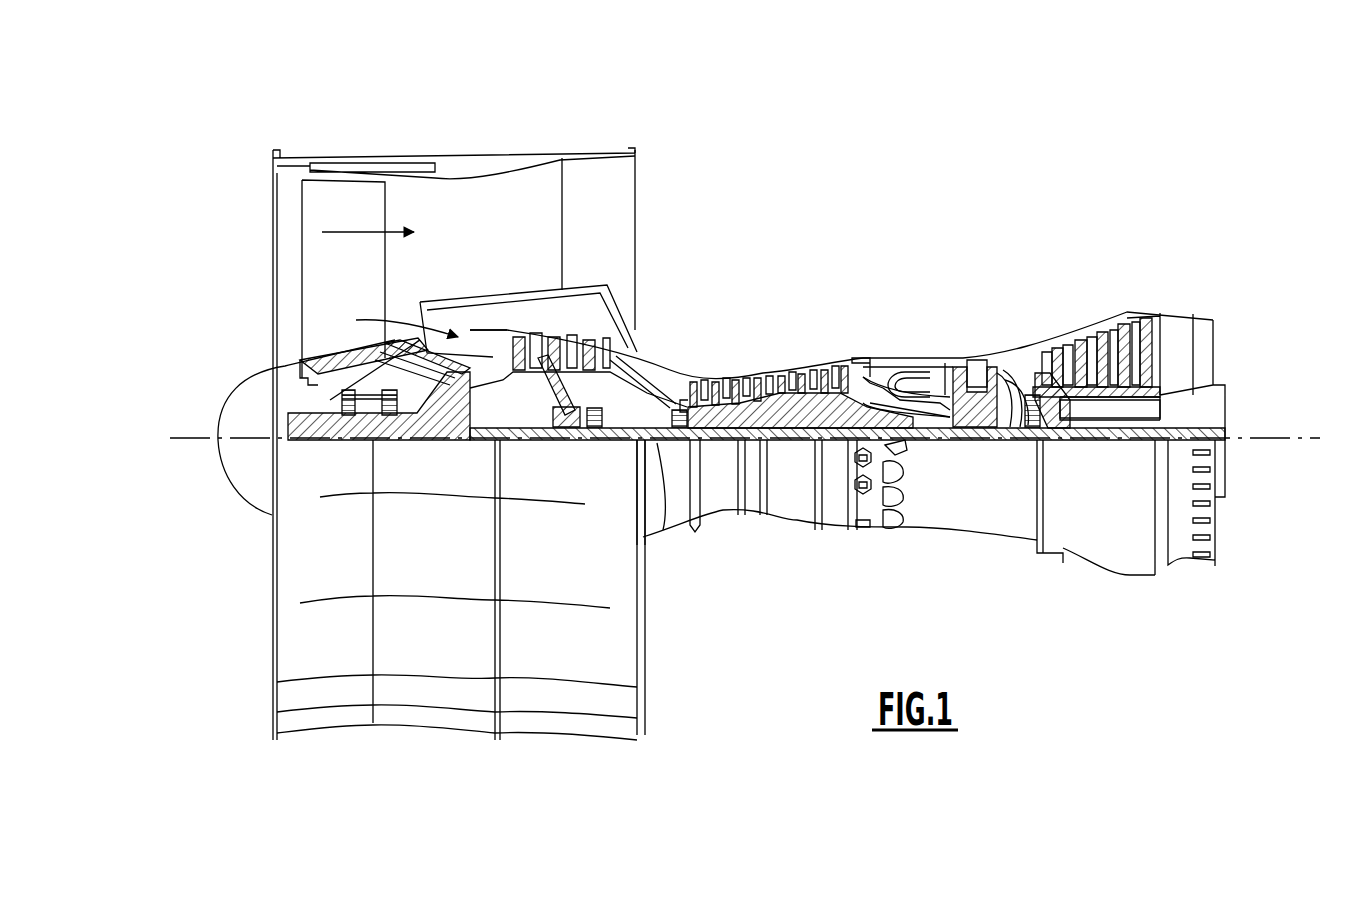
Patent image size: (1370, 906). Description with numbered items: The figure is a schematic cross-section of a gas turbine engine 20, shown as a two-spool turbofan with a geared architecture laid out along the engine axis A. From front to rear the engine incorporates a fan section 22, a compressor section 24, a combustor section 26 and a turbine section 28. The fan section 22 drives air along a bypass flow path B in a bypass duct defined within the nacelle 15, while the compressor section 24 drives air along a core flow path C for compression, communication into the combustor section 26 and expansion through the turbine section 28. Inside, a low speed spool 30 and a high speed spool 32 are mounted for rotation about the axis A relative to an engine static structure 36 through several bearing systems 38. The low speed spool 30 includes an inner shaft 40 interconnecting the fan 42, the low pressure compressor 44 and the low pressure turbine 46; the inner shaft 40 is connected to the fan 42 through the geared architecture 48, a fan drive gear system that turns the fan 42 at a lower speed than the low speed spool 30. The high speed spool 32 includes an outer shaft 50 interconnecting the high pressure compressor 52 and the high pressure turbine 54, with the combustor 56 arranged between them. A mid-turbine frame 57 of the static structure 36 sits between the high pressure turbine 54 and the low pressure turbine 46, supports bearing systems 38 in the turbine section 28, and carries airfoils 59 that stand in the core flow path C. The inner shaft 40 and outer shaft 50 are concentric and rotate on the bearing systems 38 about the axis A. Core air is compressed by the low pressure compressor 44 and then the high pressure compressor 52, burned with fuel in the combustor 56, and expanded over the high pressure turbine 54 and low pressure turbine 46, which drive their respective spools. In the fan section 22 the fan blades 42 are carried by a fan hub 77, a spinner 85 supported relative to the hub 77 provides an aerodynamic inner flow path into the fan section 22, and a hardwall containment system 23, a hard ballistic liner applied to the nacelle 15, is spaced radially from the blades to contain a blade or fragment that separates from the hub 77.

The gas turbine engine 20 is at (913, 208).
The fan section 22 is at (388, 148).
The hardwall containment system 23 is at (393, 170).
The nacelle 15 is at (453, 162).
The fan 42 is at (355, 286).
The bypass flow path B is at (357, 228).
The core flow path C is at (396, 319).
The compressor section 24 is at (688, 350).
The combustor section 26 is at (910, 335).
The turbine section 28 is at (1055, 300).
The low speed spool 30 is at (792, 450).
The high speed spool 32 is at (832, 408).
The engine static structure 36 is at (832, 530).
The bearing systems 38 is at (597, 430).
The inner shaft 40 is at (660, 465).
The low pressure compressor 44 is at (553, 352).
The low pressure turbine 46 is at (1103, 322).
The geared architecture 48 is at (462, 428).
The outer shaft 50 is at (920, 440).
The high pressure compressor 52 is at (763, 412).
The high pressure turbine 54 is at (967, 360).
The combustor 56 is at (915, 382).
The mid-turbine frame 57 is at (1017, 347).
The airfoils 59 is at (1030, 377).
The fan hub 77 is at (315, 405).
The spinner 85 is at (228, 473).
The engine axis A is at (1310, 438).